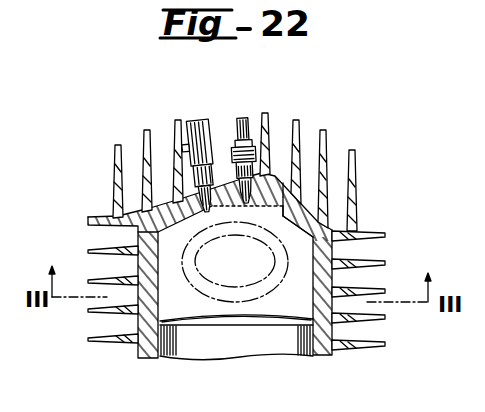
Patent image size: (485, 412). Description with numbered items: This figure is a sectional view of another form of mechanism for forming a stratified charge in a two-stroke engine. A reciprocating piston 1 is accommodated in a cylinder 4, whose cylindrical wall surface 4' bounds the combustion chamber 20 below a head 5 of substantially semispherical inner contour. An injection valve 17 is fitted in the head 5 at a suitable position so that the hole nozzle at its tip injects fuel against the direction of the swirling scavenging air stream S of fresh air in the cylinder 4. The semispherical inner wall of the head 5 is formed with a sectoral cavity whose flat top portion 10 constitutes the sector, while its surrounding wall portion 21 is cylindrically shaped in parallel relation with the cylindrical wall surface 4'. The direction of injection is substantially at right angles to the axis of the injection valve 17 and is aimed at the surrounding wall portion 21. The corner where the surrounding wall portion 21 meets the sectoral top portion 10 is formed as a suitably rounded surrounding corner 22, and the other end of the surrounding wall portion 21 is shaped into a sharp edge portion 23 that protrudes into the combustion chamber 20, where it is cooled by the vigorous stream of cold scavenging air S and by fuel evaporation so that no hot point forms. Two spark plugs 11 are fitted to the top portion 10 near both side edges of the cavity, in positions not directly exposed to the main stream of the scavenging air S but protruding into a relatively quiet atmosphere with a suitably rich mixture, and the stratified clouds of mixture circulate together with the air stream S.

The piston 1 is at (256, 357).
The cylinder 4 is at (328, 313).
The cylindrical wall surface 4' is at (372, 267).
The head 5 is at (182, 221).
The top portion 10 is at (274, 162).
The spark plug 11 is at (246, 128).
The injection valve 17 is at (199, 120).
The combustion chamber 20 is at (200, 310).
The surrounding wall portion 21 is at (285, 196).
The surrounding corner 22 is at (292, 190).
The edge portion 23 is at (297, 213).
The scavenging air stream S is at (277, 288).